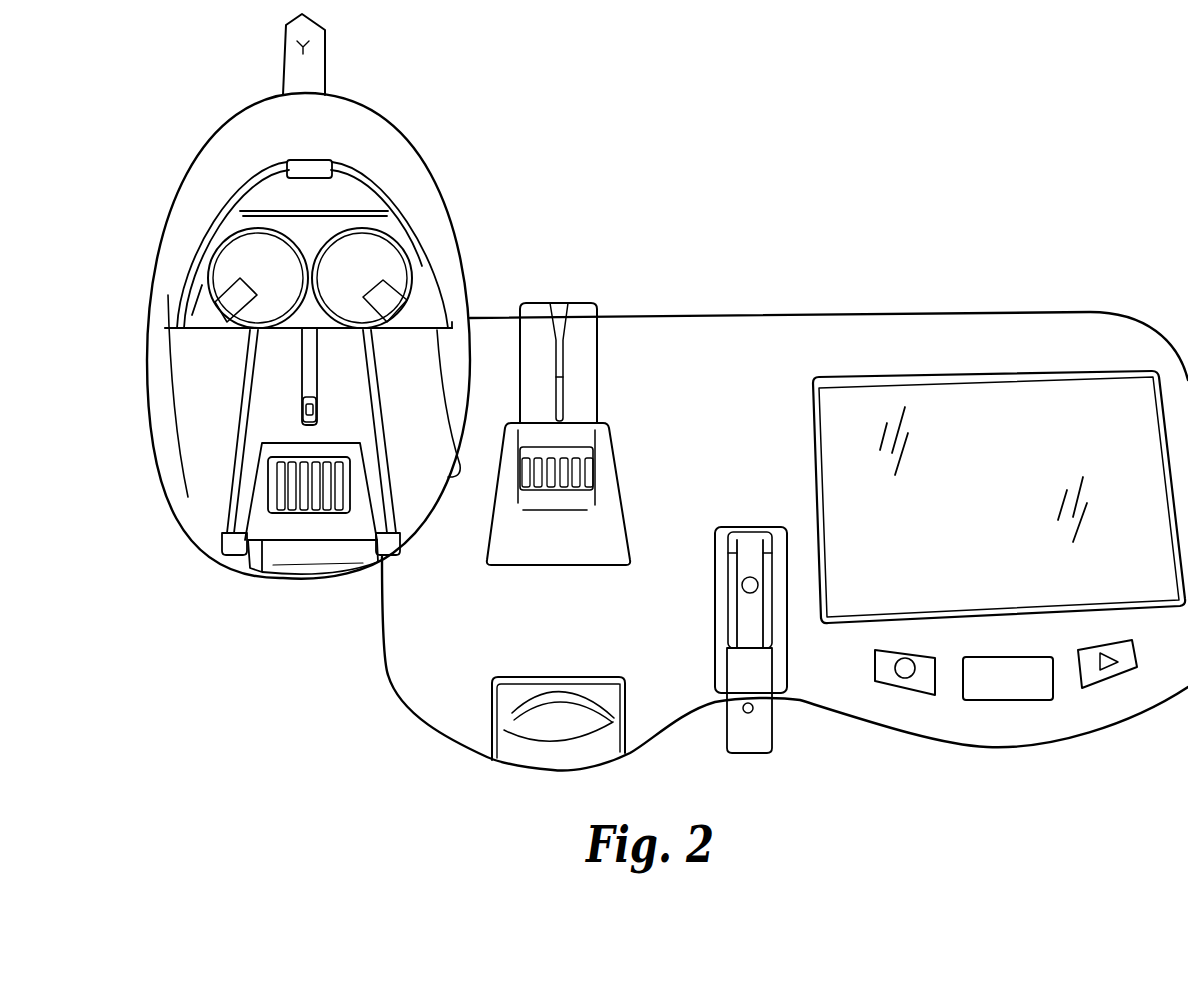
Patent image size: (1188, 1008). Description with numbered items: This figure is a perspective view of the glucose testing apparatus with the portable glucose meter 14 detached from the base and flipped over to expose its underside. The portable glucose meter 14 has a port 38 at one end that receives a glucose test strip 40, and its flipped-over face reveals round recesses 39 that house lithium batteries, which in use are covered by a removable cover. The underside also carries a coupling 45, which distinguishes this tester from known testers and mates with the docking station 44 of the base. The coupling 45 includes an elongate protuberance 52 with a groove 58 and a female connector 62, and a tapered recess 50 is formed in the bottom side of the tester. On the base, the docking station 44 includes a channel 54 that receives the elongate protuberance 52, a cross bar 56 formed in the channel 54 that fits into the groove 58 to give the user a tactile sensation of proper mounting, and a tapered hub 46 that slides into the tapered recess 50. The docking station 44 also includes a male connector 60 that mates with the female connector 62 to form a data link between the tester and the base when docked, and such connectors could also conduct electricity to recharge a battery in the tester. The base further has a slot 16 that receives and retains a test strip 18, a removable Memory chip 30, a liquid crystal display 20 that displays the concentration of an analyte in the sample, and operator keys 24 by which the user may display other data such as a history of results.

The portable glucose meter 14 is at (470, 136).
The port 38 is at (290, 98).
The glucose test strip 40 is at (317, 58).
The round recesses 39 is at (250, 257).
The coupling 45 is at (218, 504).
The elongate protuberance 52 is at (302, 397).
The groove 58 is at (317, 403).
The female connector 62 is at (302, 503).
The tapered recess 50 is at (257, 566).
The channel 54 is at (560, 320).
The cross bar 56 is at (560, 380).
The docking station 44 is at (640, 458).
The male connector 60 is at (520, 477).
The tapered hub 46 is at (595, 512).
The slot 16 is at (727, 647).
The test strip 18 is at (757, 727).
The Memory chip 30 is at (488, 797).
The liquid crystal display 20 is at (955, 420).
The operator keys 24 is at (913, 683).